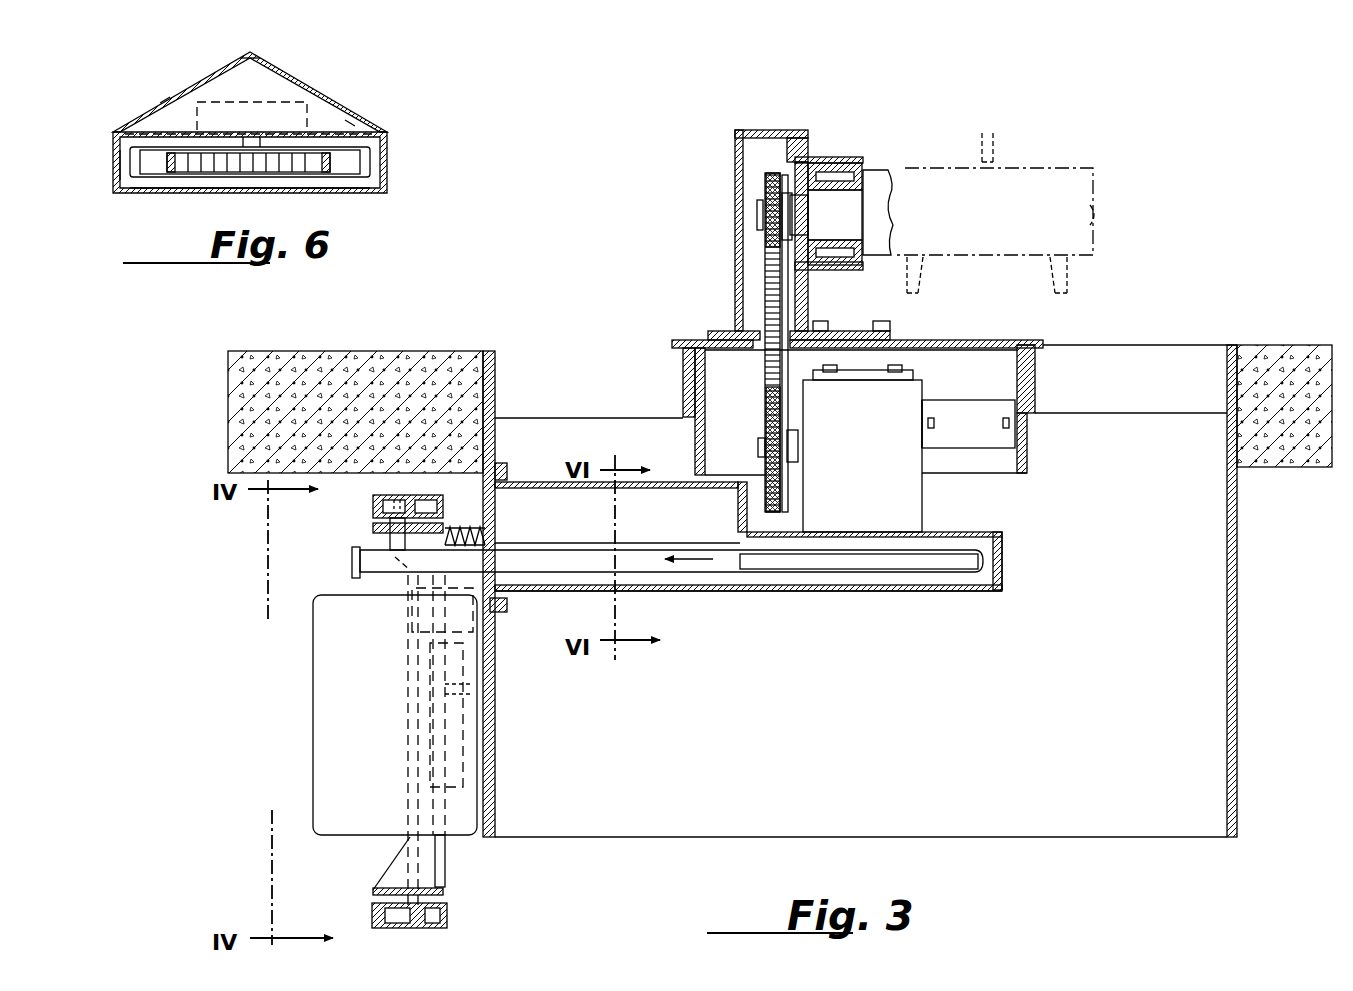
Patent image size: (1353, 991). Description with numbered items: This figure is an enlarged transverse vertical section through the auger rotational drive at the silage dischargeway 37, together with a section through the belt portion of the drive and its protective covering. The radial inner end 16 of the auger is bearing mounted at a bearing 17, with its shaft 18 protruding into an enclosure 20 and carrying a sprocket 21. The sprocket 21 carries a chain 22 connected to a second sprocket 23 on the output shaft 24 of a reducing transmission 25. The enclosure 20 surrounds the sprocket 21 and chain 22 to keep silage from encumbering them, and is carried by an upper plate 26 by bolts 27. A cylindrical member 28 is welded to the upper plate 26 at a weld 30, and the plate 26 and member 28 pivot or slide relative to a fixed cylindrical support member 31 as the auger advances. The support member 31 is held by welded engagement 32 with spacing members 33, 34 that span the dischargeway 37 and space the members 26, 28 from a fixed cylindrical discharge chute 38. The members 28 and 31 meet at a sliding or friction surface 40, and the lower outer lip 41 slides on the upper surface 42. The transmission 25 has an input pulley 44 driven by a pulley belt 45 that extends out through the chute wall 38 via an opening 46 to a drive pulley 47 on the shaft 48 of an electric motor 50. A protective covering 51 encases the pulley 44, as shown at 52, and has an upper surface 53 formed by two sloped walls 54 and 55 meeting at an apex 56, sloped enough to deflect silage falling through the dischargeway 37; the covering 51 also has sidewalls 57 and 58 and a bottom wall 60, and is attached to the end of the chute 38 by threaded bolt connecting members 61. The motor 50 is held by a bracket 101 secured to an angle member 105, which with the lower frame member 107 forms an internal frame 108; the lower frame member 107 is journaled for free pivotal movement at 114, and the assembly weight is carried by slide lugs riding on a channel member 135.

In FIG. 3, the radial inner end of the auger 16 is at (880, 195).
In FIG. 3, the bearing 17 is at (850, 165).
In FIG. 3, the shaft 18 is at (805, 195).
In FIG. 3, the enclosure 20 is at (770, 130).
In FIG. 3, the sprocket 21 is at (762, 185).
In FIG. 3, the chain 22 is at (765, 262).
In FIG. 3, the sprocket 23 is at (780, 492).
In FIG. 3, the output shaft 24 is at (800, 445).
In FIG. 6, the reducing transmission 25 is at (300, 112).
In FIG. 3, the reducing transmission 25 is at (910, 505).
In FIG. 3, the upper plate 26 is at (920, 335).
In FIG. 3, the bolts 27 is at (875, 321).
In FIG. 3, the cylindrical member 28 is at (1015, 385).
In FIG. 3, the weld 30 is at (1000, 340).
In FIG. 3, the cylindrical support member 31 is at (1037, 368).
In FIG. 3, the welded engagement 32 is at (1030, 415).
In FIG. 3, the spacing member 33 is at (1160, 345).
In FIG. 3, the spacing member 34 is at (530, 360).
In FIG. 3, the dischargeway 37 is at (840, 680).
In FIG. 3, the cylindrical discharge chute 38 is at (1228, 567).
In FIG. 3, the sliding or friction surface 40 is at (1037, 397).
In FIG. 3, the lower outer lip 41 is at (1030, 350).
In FIG. 3, the upper surface 42 is at (680, 345).
In FIG. 6, the input pulley 44 is at (350, 178).
In FIG. 3, the input pulley 44 is at (950, 575).
In FIG. 6, the pulley belt 45 is at (363, 165).
In FIG. 3, the pulley belt 45 is at (975, 560).
In FIG. 3, the opening 46 is at (495, 545).
In FIG. 3, the drive pulley 47 is at (360, 552).
In FIG. 3, the motor shaft 48 is at (373, 516).
In FIG. 3, the electric motor 50 is at (340, 655).
In FIG. 6, the protective covering 51 is at (385, 198).
In FIG. 3, the protective covering 51 is at (707, 596).
In FIG. 3, the encasing of the pulley 52 is at (985, 530).
In FIG. 6, the upper surface 53 is at (318, 86).
In FIG. 6, the sloped surface wall 54 is at (350, 123).
In FIG. 6, the sloped surface wall 55 is at (165, 105).
In FIG. 6, the apex 56 is at (250, 56).
In FIG. 6, the sidewall 57 is at (385, 158).
In FIG. 3, the sidewall 57 is at (1002, 575).
In FIG. 6, the sidewall 58 is at (118, 167).
In FIG. 6, the bottom wall 60 is at (165, 192).
In FIG. 3, the bottom wall 60 is at (900, 592).
In FIG. 3, the threaded bolt type connecting members 61 is at (507, 470).
In FIG. 3, the bracket 101 is at (505, 735).
In FIG. 3, the angle member 105 is at (445, 862).
In FIG. 3, the lower frame member 107 is at (385, 497).
In FIG. 3, the internal frame 108 is at (440, 497).
In FIG. 3, the pivot journal 114 is at (373, 913).
In FIG. 3, the channel member 135 is at (490, 620).